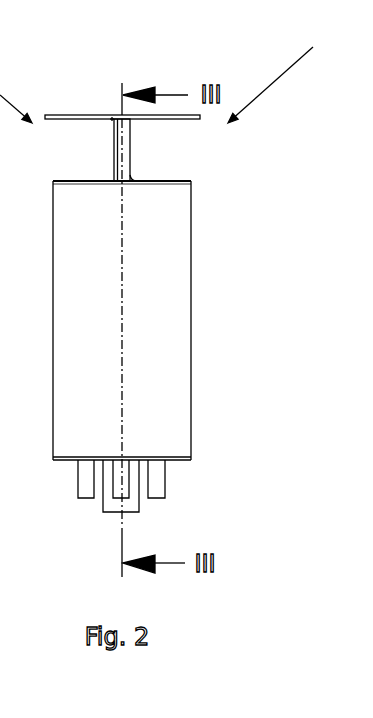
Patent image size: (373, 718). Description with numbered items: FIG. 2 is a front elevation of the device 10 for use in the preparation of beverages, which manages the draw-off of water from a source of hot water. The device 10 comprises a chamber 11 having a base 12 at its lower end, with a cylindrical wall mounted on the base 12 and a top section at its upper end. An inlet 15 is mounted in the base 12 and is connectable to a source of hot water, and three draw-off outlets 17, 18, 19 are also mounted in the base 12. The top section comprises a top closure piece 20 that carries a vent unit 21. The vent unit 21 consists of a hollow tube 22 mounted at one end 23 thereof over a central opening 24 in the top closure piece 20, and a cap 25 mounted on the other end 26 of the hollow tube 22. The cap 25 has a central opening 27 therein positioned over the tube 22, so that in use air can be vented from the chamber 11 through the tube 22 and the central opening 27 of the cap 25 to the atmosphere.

The device 10 is at (173, 77).
The chamber 11 is at (178, 322).
The base 12 is at (173, 460).
The inlet 15 is at (107, 502).
The draw-off outlet 17 is at (123, 490).
The draw-off outlet 18 is at (157, 482).
The draw-off outlet 19 is at (88, 483).
The top closure piece 20 is at (182, 177).
The vent unit 21 is at (120, 142).
The hollow tube 22 is at (120, 169).
The one end of hollow tube 23 is at (133, 173).
The central opening 24 is at (123, 183).
The cap 25 is at (68, 115).
The other end of hollow tube 26 is at (113, 117).
The central opening of cap 27 is at (113, 117).